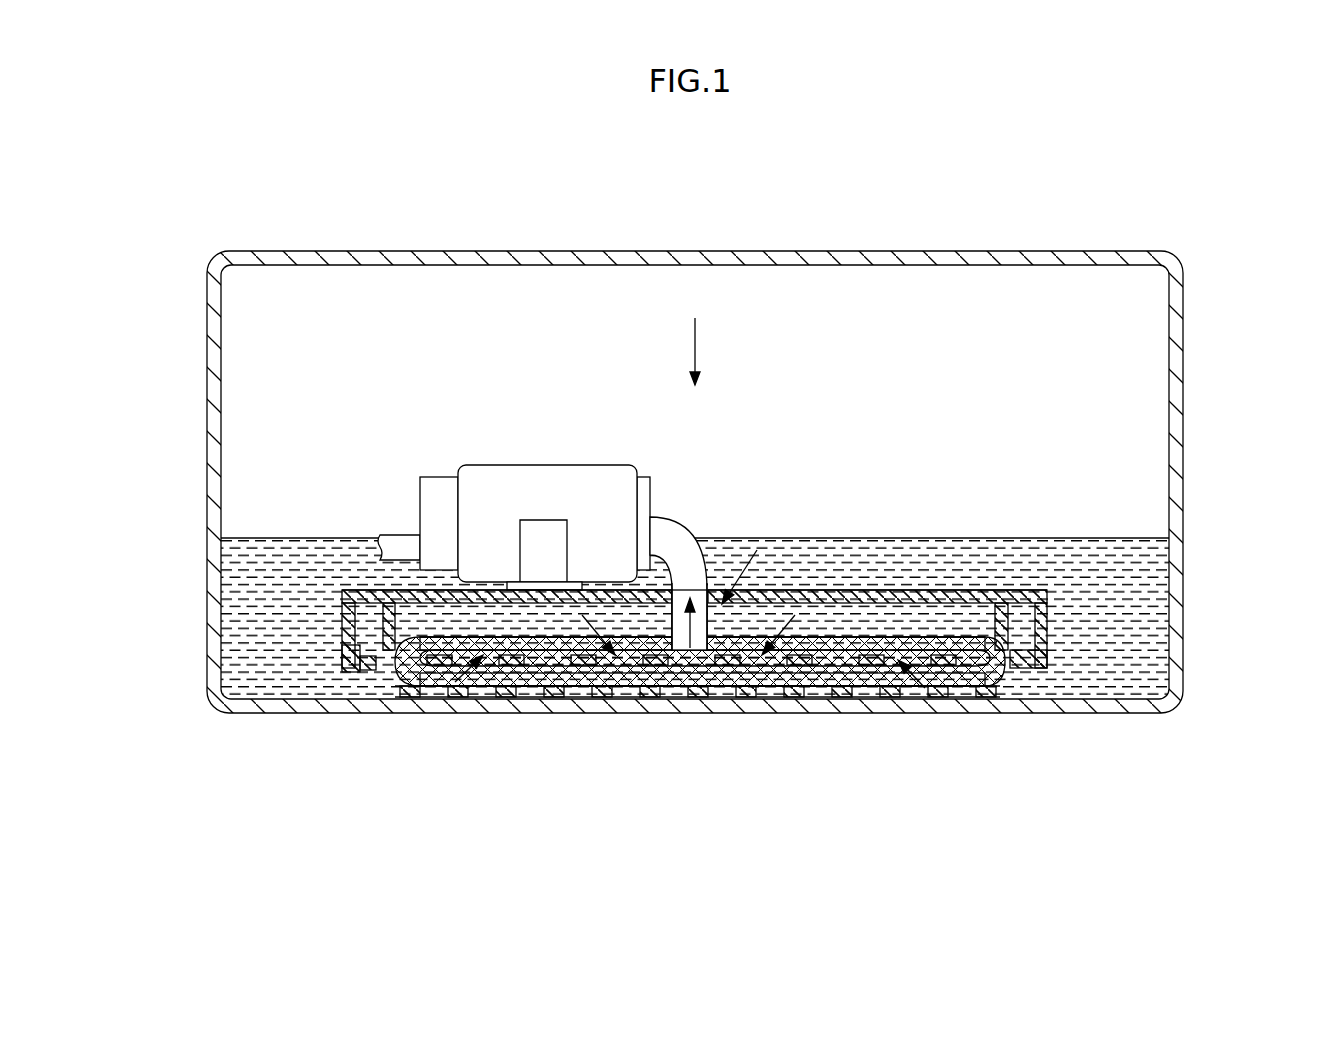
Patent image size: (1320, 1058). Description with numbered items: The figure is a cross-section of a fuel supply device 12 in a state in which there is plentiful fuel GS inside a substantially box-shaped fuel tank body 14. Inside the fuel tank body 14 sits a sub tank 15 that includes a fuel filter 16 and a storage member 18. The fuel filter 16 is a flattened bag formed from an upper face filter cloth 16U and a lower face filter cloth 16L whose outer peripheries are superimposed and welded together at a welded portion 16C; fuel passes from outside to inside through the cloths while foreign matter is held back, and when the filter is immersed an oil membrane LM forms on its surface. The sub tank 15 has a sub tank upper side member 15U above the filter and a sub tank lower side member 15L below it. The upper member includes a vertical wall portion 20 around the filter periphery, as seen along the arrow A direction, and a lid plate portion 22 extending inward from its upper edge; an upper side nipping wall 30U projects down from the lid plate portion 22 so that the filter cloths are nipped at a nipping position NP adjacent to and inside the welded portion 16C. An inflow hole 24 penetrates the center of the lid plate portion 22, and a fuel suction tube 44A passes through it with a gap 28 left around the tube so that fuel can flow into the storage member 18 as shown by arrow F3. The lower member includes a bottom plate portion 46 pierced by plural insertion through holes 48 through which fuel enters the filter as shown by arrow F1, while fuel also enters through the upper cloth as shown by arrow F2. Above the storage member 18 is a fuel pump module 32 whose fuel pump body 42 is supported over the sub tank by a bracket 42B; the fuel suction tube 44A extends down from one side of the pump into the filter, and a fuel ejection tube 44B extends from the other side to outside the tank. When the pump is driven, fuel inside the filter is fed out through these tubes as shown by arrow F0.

The fuel supply device 12 is at (680, 652).
The fuel tank body 14 is at (1186, 320).
The sub tank 15 is at (1045, 573).
The sub tank upper side member 15U is at (342, 607).
The sub tank lower side member 15L is at (392, 697).
The fuel filter 16 is at (982, 700).
The upper face filter cloth 16U is at (510, 697).
The lower face filter cloth 16L is at (540, 695).
The welded portion 16C is at (368, 668).
The storage member 18 is at (957, 588).
The vertical wall portion 20 is at (1045, 613).
The lid plate portion 22 is at (875, 590).
The inflow hole 24 is at (740, 597).
The gap 28 is at (718, 585).
The upper side nipping wall 30U is at (985, 622).
The fuel pump module 32 is at (537, 510).
The fuel pump body 42 is at (497, 465).
The bracket 42B is at (545, 520).
The fuel suction tube 44A is at (672, 520).
The fuel ejection tube 44B is at (381, 537).
The bottom plate portion 46 is at (740, 697).
The insertion through holes 48 is at (611, 697).
The arrow A direction A is at (714, 351).
The arrow F0 is at (683, 690).
The arrow F1 is at (418, 695).
The arrow F2 is at (585, 697).
The arrow F3 is at (749, 543).
The fuel GS is at (340, 553).
The oil membrane LM is at (825, 695).
The nipping position NP is at (997, 695).